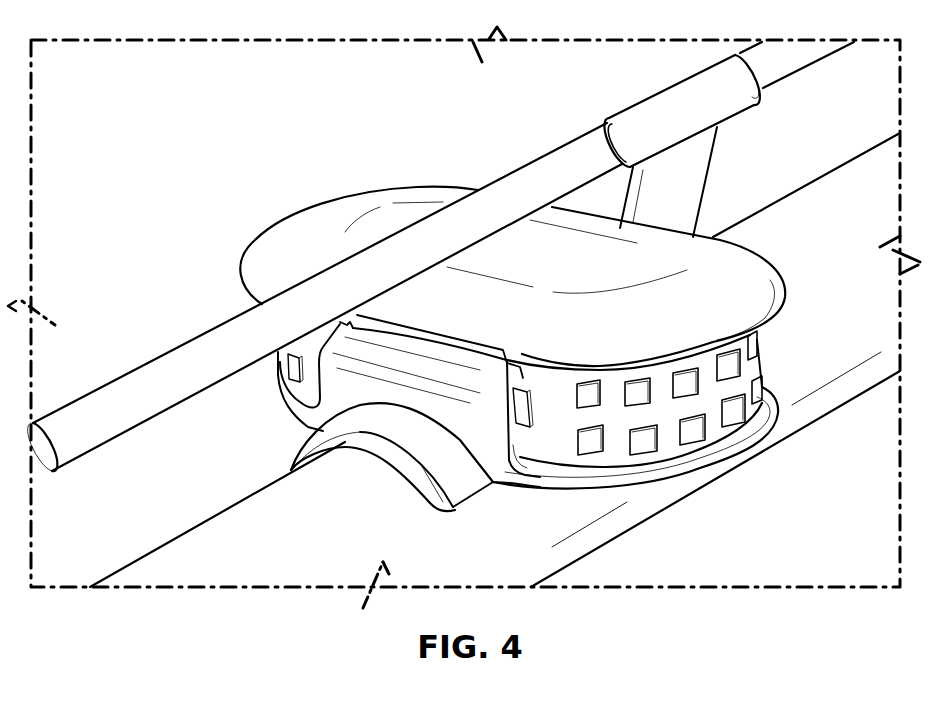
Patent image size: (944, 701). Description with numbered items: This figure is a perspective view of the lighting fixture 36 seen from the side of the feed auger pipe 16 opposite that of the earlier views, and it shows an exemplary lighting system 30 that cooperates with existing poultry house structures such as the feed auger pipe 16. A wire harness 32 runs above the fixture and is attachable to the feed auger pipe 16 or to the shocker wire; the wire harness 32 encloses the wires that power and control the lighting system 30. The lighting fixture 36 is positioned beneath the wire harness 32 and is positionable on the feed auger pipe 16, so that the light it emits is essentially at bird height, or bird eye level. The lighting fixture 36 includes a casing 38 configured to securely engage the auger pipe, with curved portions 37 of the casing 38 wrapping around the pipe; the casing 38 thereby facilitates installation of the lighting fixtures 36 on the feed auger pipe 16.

The feed auger pipe 16 is at (810, 363).
The lighting system 30 is at (247, 173).
The wire harness 32 is at (212, 354).
The lighting fixture 36 is at (690, 500).
The curved portions 37 is at (393, 455).
The casing 38 is at (743, 267).